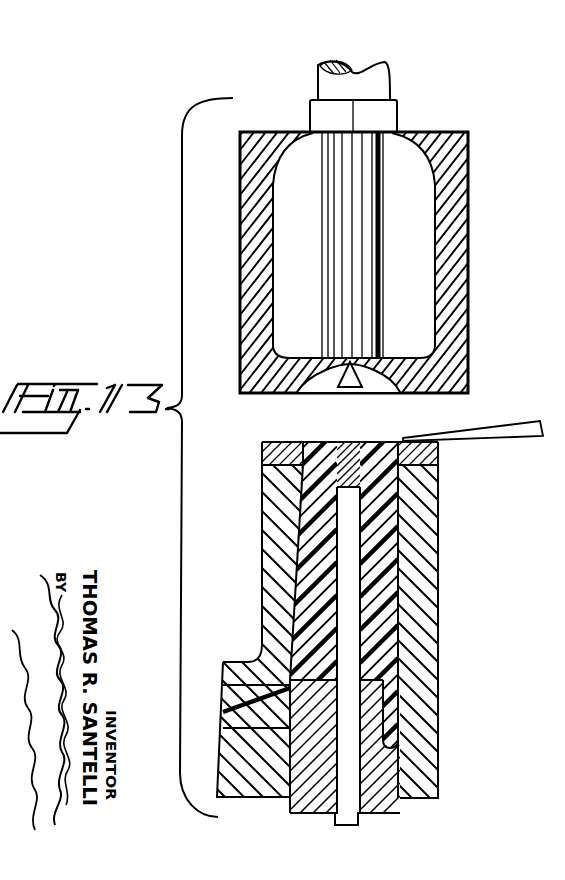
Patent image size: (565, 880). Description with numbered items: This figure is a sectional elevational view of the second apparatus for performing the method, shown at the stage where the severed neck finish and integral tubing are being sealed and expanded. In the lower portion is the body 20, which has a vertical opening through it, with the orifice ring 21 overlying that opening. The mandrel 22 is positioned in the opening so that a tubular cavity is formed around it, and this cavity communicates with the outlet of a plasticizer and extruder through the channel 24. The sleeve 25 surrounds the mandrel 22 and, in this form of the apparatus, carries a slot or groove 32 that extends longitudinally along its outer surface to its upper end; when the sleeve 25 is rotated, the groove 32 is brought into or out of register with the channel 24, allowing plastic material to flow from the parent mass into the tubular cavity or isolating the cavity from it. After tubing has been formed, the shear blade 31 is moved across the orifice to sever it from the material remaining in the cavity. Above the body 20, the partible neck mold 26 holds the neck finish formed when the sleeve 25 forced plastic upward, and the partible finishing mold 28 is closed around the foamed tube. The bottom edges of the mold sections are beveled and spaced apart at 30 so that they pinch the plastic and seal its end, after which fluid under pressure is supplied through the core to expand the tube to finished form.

The body 20 is at (427, 607).
The orifice ring 21 is at (438, 458).
The mandrel 22 is at (356, 826).
The channel 24 is at (240, 728).
The sleeve 25 is at (293, 805).
The partible neck mold 26 is at (388, 117).
The partible finishing mold 28 is at (455, 255).
The spacing of mold sections 30 is at (343, 363).
The shear blade 31 is at (544, 426).
The groove 32 is at (395, 727).